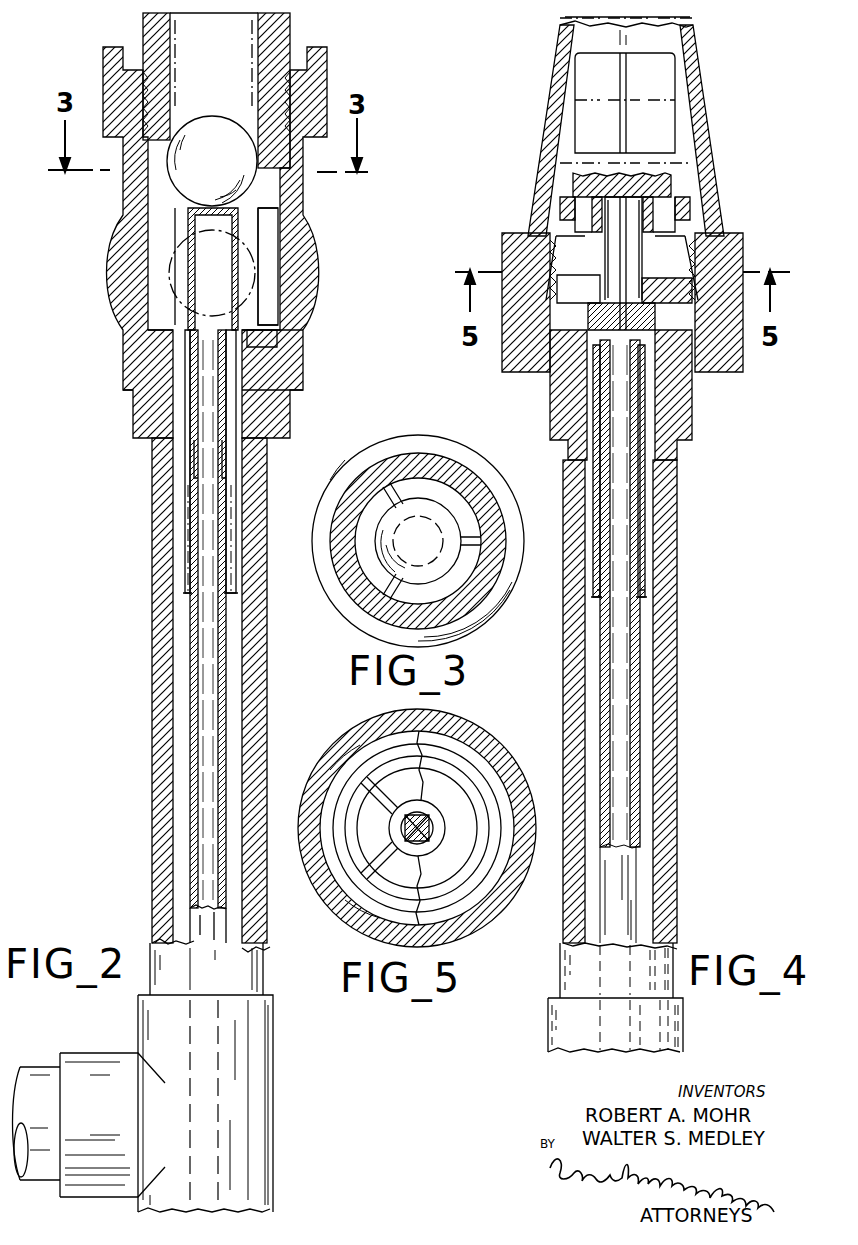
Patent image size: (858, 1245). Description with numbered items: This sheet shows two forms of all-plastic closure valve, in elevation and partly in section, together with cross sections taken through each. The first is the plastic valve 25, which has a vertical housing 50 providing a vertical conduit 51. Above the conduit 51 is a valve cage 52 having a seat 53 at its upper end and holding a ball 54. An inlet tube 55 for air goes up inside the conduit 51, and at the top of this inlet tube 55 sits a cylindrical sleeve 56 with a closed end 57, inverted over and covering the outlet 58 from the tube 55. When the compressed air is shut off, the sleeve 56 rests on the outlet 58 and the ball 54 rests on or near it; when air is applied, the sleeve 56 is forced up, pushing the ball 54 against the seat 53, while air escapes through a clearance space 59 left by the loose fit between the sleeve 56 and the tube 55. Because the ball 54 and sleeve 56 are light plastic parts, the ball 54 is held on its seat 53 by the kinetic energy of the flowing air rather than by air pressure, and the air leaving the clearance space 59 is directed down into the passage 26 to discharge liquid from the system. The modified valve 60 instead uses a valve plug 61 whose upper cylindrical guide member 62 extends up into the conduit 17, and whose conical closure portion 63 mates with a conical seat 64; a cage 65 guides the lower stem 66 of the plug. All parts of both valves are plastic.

In FIG. 2, the conduit 17 is at (290, 27).
In FIG. 4, the conduit 17 is at (692, 28).
In FIG. 2, the plastic valve 25 is at (118, 191).
In FIG. 3, the plastic valve 25 is at (394, 430).
In FIG. 2, the passage 26 is at (40, 1067).
In FIG. 2, the vertical housing 50 is at (152, 462).
In FIG. 2, the vertical conduit 51 is at (240, 694).
In FIG. 4, the vertical conduit 51 is at (665, 722).
In FIG. 2, the valve cage 52 is at (268, 275).
In FIG. 3, the valve cage 52 is at (472, 535).
In FIG. 2, the seat 53 is at (255, 137).
In FIG. 2, the ball 54 is at (216, 130).
In FIG. 3, the ball 54 is at (452, 507).
In FIG. 2, the inlet tube 55 is at (190, 765).
In FIG. 4, the inlet tube 55 is at (635, 805).
In FIG. 2, the cylindrical sleeve 56 is at (152, 322).
In FIG. 4, the cylindrical sleeve 56 is at (645, 475).
In FIG. 2, the closed end 57 is at (200, 224).
In FIG. 4, the closed end 57 is at (608, 322).
In FIG. 2, the outlet 58 is at (288, 356).
In FIG. 4, the outlet 58 is at (680, 360).
In FIG. 2, the clearance space 59 is at (228, 470).
In FIG. 4, the clearance space 59 is at (636, 575).
In FIG. 5, the modified valve 60 is at (493, 743).
In FIG. 4, the modified valve 60 is at (678, 548).
In FIG. 4, the valve plug 61 is at (575, 185).
In FIG. 4, the upper cylindrical guide member 62 is at (590, 110).
In FIG. 4, the conical closure portion 63 is at (685, 205).
In FIG. 4, the conical seat 64 is at (716, 215).
In FIG. 5, the cage 65 is at (378, 852).
In FIG. 4, the cage 65 is at (592, 230).
In FIG. 5, the lower stem 66 is at (414, 844).
In FIG. 4, the lower stem 66 is at (630, 287).